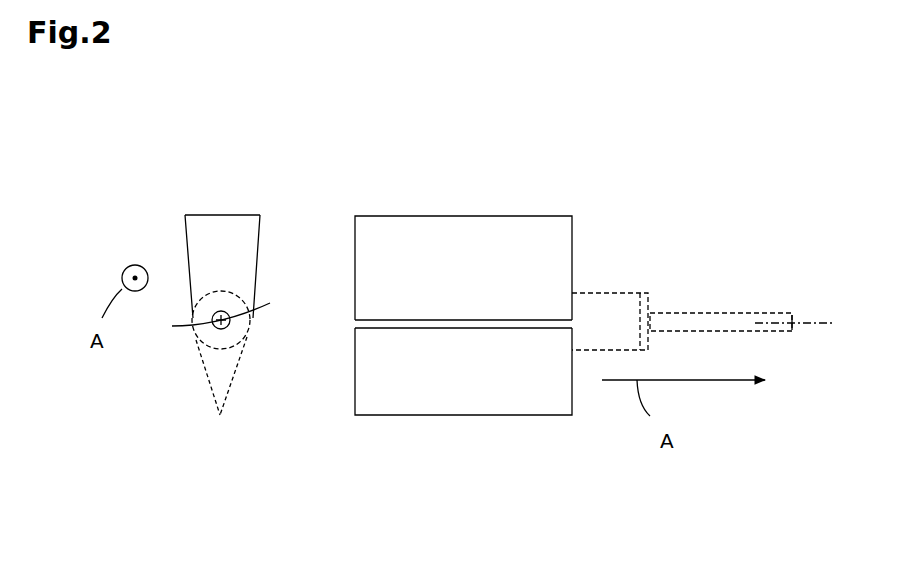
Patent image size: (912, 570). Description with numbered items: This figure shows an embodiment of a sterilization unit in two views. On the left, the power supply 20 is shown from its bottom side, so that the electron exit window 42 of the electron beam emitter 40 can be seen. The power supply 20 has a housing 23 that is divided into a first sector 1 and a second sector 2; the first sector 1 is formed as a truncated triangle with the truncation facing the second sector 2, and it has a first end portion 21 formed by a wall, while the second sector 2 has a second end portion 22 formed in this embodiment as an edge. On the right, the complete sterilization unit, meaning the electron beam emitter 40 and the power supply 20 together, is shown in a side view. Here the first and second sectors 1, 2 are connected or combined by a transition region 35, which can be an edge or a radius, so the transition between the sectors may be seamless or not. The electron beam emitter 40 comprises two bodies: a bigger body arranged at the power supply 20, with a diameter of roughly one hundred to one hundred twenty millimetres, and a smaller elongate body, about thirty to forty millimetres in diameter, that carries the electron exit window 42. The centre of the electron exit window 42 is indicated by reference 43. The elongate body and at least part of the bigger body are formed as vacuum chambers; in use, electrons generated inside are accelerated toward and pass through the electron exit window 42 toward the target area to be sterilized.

The first sector 1 is at (399, 245).
The second sector 2 is at (400, 384).
The power supply 20 is at (155, 376).
The first end portion 21 is at (213, 205).
The second end portion 22 is at (219, 423).
The housing 23 is at (229, 215).
The transition region 35 is at (536, 328).
The electron beam emitter 40 is at (232, 348).
The electron exit window 42 is at (814, 265).
The centre point of electron exit window 43 is at (834, 360).